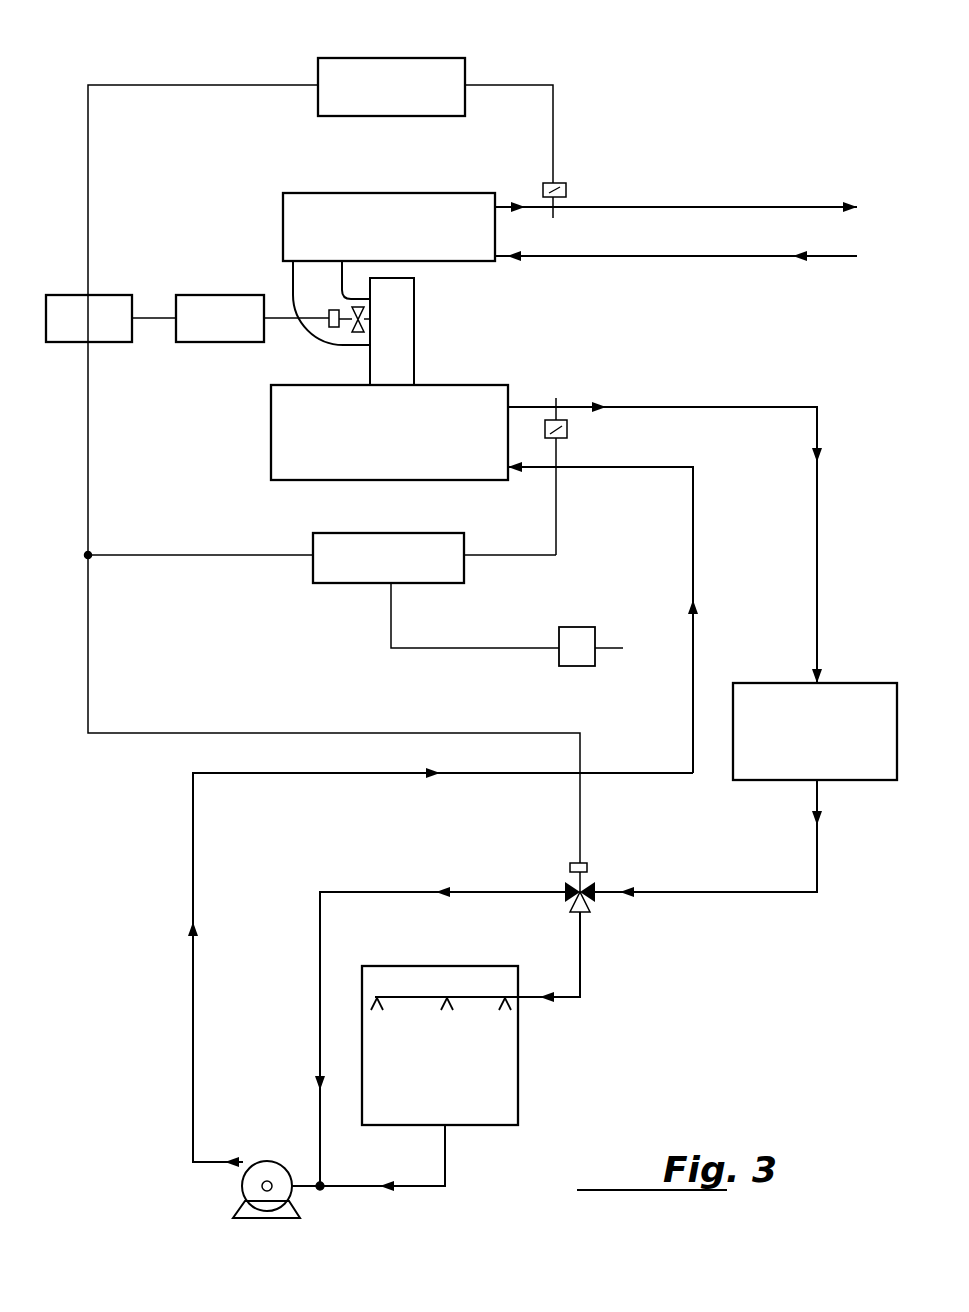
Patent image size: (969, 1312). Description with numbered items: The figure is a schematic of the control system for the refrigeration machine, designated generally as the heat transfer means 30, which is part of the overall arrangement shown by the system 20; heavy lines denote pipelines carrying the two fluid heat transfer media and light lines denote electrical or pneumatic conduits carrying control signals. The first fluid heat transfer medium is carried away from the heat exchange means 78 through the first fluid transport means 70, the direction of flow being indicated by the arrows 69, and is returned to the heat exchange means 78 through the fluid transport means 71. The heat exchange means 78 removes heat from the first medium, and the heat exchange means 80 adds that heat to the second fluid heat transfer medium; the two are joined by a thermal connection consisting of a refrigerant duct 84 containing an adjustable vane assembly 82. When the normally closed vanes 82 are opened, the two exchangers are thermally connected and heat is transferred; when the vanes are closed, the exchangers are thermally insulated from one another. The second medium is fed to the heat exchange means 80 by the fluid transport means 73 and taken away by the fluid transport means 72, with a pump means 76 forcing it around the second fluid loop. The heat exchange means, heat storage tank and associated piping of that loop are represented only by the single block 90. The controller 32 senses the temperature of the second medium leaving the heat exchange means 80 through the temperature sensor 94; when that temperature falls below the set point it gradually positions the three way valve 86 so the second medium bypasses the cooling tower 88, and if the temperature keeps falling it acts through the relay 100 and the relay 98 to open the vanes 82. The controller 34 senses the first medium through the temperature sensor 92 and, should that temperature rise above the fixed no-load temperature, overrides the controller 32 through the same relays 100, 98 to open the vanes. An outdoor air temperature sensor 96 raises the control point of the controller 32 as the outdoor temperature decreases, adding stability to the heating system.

The system 20 is at (207, 414).
The refrigeration machine 30 is at (457, 275).
The controller 32 is at (345, 567).
The controller 34 is at (386, 67).
The arrows 69 is at (515, 200).
The first fluid transport means 70 is at (657, 206).
The second fluid transport means 71 is at (650, 258).
The fluid transport means 72 is at (662, 406).
The second fluid transport means 73 is at (650, 470).
The pump means 76 is at (272, 1172).
The heat exchange means 78 is at (315, 205).
The heat exchange means 80 is at (408, 444).
The adjustable vane assembly 82 is at (355, 329).
The refrigerant duct 84 is at (295, 292).
The three way valve 86 is at (595, 886).
The cooling tower 88 is at (451, 1081).
The block 90 is at (826, 746).
The temperature sensor 92 is at (566, 187).
The temperature sensor 94 is at (567, 431).
The outdoor air temperature sensor 96 is at (572, 637).
The relay 98 is at (208, 335).
The relay 100 is at (105, 300).